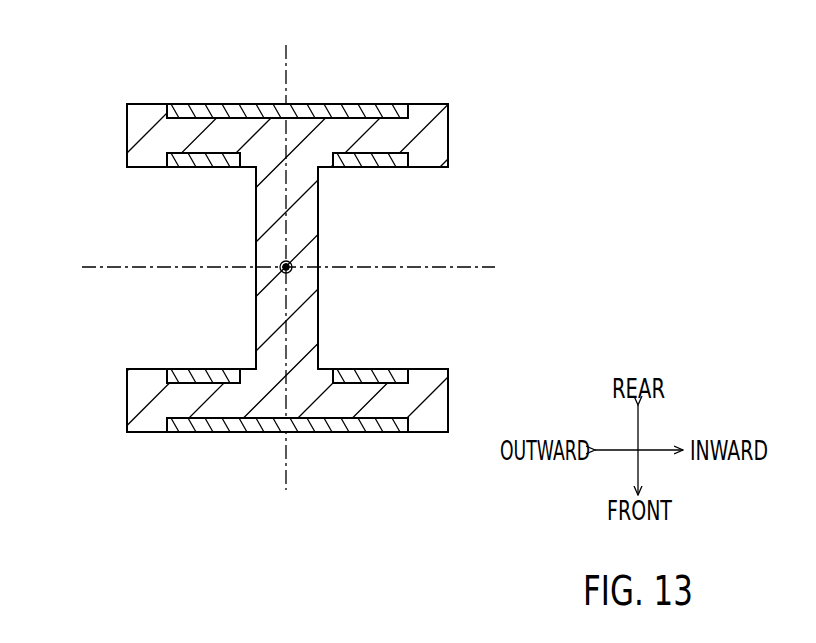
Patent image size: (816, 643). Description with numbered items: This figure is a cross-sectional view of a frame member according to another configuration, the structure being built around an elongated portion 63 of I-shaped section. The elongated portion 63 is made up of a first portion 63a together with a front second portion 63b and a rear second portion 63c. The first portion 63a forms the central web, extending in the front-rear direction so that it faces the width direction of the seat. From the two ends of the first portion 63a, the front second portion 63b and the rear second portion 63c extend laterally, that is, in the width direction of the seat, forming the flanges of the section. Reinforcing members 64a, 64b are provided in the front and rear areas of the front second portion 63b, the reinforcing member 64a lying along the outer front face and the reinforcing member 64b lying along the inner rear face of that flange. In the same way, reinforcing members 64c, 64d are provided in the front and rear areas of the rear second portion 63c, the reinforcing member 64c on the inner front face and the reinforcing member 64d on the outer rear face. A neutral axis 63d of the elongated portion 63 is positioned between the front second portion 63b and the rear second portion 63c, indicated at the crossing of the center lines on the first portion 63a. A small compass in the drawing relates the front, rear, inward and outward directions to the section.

The elongated portion 63 is at (95, 92).
The first portion 63a is at (256, 248).
The front second portion 63b is at (135, 405).
The rear second portion 63c is at (440, 132).
The neutral axis 63d is at (292, 264).
The reinforcing member 64a is at (322, 433).
The reinforcing member 64b is at (200, 368).
The reinforcing member 64c is at (207, 168).
The reinforcing member 64d is at (330, 107).